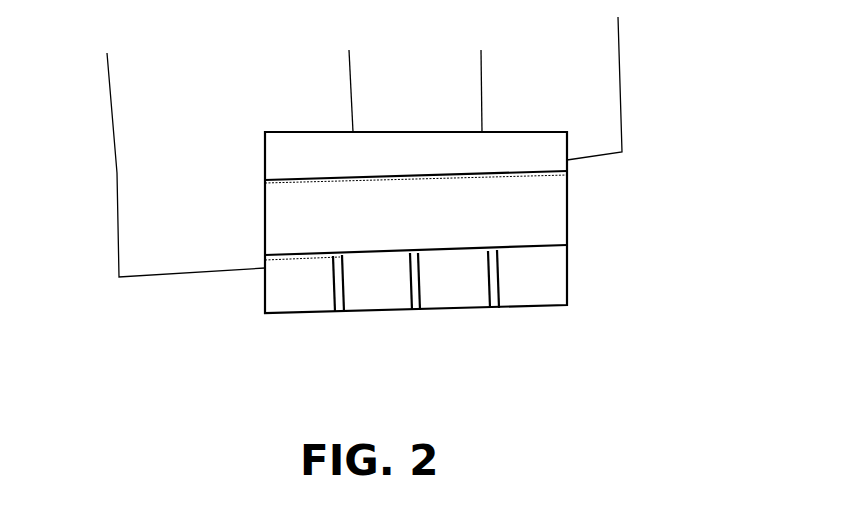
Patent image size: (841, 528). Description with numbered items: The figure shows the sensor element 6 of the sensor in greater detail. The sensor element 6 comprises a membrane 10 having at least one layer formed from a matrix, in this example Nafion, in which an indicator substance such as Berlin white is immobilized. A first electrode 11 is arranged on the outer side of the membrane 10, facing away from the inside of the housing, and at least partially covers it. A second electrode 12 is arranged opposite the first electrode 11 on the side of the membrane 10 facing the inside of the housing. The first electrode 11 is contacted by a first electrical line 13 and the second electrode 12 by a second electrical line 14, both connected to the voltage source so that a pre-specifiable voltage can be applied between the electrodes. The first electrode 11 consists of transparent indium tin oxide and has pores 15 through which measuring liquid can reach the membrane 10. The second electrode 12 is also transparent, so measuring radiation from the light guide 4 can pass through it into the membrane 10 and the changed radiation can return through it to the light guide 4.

The light guide 4 is at (460, 93).
The sensor element 6 is at (633, 295).
The membrane 10 is at (550, 211).
The first electrode 11 is at (272, 284).
The second electrode 12 is at (280, 152).
The first electrical line 13 is at (113, 177).
The second electrical line 14 is at (622, 90).
The pores 15 is at (497, 312).